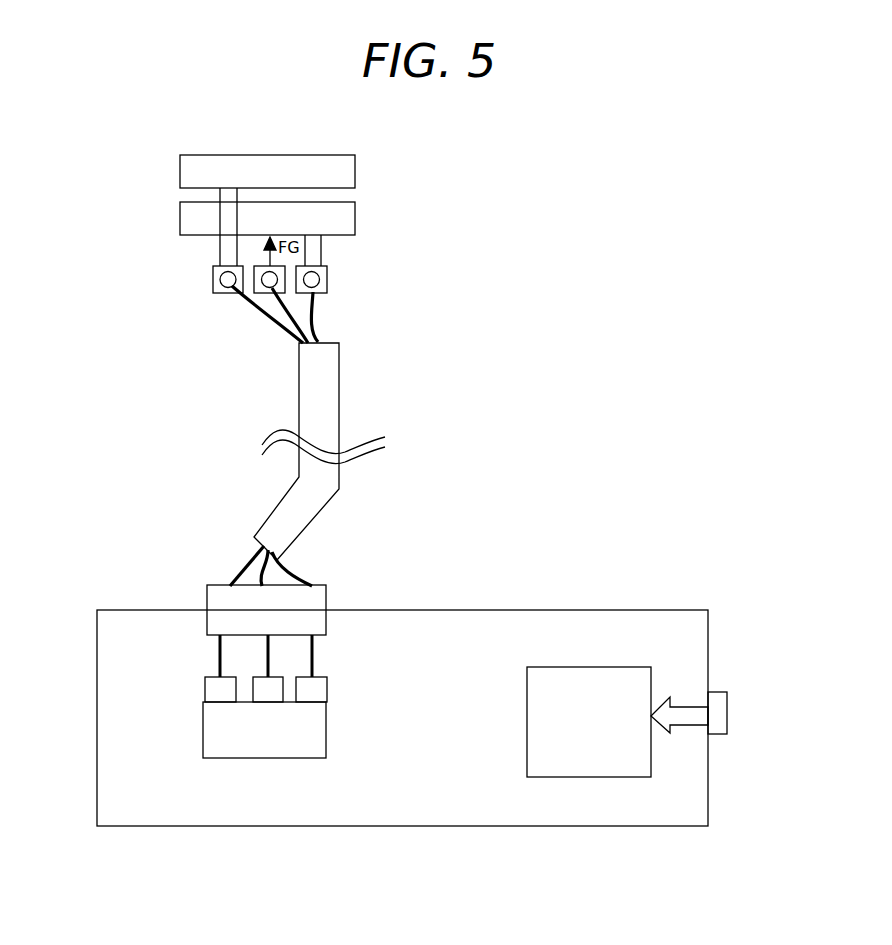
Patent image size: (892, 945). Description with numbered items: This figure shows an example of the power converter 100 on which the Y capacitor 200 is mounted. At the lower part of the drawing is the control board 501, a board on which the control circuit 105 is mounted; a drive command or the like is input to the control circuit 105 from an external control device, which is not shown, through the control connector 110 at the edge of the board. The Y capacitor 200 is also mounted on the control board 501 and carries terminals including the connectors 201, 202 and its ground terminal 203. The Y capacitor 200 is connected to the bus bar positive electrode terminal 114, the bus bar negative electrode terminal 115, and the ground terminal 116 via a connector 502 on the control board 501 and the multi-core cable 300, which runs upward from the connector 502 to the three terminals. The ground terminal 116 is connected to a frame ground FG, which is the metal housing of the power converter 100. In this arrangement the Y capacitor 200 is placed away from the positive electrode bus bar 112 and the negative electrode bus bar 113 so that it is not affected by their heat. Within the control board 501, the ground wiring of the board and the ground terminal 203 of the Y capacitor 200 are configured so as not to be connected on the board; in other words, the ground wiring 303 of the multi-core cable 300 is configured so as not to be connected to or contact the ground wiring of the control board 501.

The power converter 100 is at (490, 394).
The control circuit 105 is at (527, 702).
The control connector 110 is at (727, 695).
The positive electrode bus bar 112 is at (355, 167).
The negative electrode bus bar 113 is at (355, 220).
The bus bar positive electrode terminal 114 is at (213, 280).
The bus bar negative electrode terminal 115 is at (327, 277).
The ground terminal 116 is at (262, 315).
The Y capacitor 200 is at (203, 740).
The connector 201 is at (205, 690).
The connector 202 is at (327, 692).
The ground terminal 203 is at (265, 702).
The multi-core cable 300 is at (274, 512).
The ground wiring 303 is at (262, 553).
The control board 501 is at (473, 610).
The connector 502 is at (207, 598).